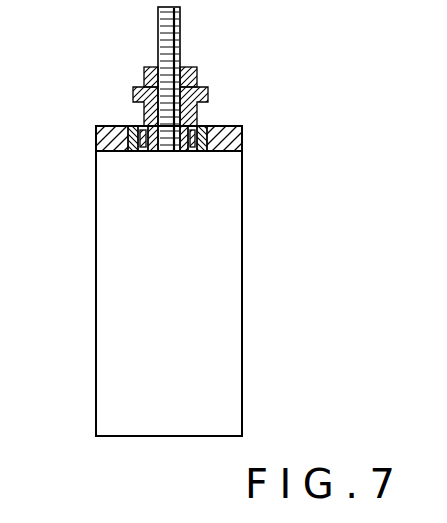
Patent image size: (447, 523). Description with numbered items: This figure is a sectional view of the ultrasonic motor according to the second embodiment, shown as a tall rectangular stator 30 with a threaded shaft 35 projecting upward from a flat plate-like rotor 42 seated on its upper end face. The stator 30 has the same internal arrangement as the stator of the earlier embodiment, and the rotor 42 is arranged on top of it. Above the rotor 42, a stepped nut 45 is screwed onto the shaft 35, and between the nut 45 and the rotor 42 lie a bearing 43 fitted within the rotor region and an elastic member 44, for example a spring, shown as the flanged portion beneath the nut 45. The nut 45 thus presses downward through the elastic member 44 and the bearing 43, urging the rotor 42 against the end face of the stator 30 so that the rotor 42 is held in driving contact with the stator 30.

The stator 30 is at (77, 153).
The threaded rod 35 is at (160, 43).
The rotor 42 is at (233, 139).
The bearing 43 is at (203, 131).
The elastic member 44 is at (206, 93).
The nut 45 is at (195, 68).